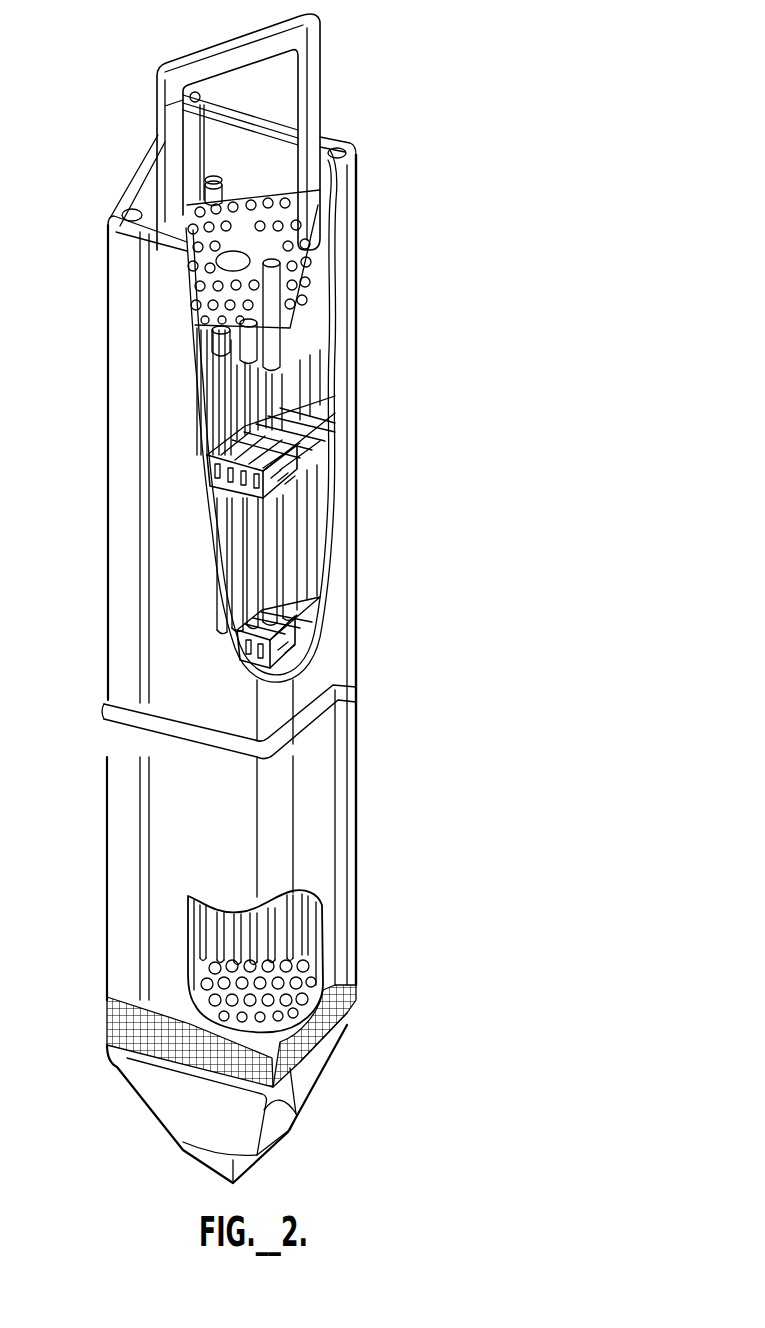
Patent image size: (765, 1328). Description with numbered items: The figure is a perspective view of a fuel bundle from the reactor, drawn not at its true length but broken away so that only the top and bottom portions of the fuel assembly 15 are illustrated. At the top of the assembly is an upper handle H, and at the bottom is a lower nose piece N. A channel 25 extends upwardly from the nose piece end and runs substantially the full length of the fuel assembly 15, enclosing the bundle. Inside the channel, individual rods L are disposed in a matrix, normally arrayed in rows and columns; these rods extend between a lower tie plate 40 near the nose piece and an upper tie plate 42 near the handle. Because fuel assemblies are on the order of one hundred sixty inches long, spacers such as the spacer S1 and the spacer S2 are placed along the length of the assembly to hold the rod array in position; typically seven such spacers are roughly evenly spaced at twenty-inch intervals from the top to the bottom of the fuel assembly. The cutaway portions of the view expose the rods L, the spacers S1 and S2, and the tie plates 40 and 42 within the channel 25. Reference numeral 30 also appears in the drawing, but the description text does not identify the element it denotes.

The fuel assembly 15 is at (357, 498).
The channel 25 is at (122, 487).
The upper handle H is at (200, 52).
The upper tie plate 42 is at (232, 346).
The fuel rods 30 is at (250, 412).
The spacer S2 is at (333, 420).
The rods L is at (312, 560).
The spacer S1 is at (297, 648).
The lower tie plate 40 is at (298, 1037).
The lower nose piece N is at (160, 1113).